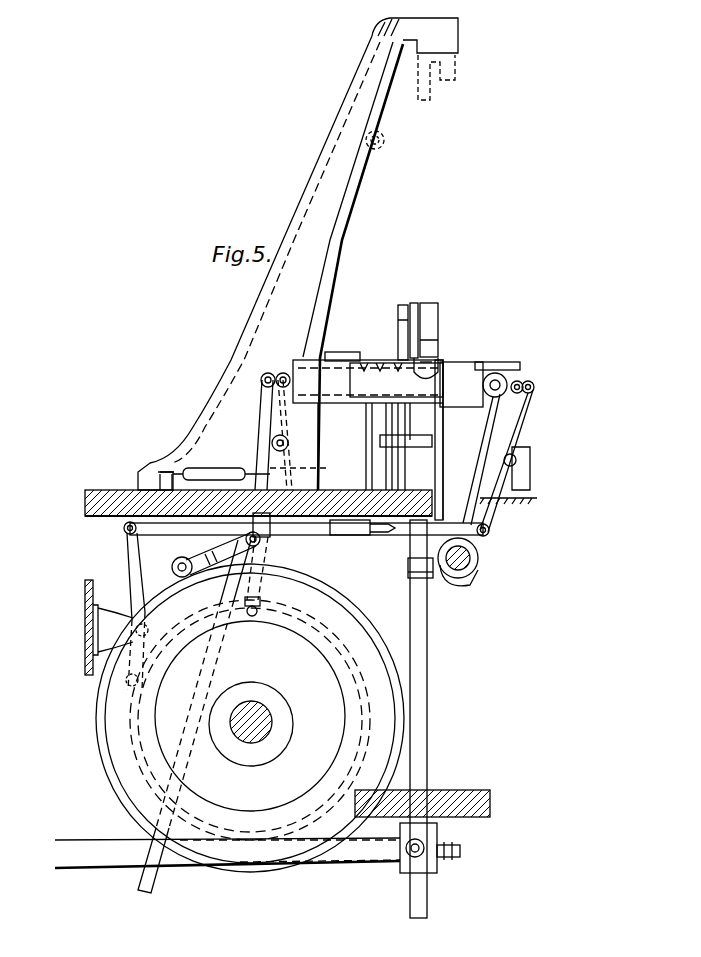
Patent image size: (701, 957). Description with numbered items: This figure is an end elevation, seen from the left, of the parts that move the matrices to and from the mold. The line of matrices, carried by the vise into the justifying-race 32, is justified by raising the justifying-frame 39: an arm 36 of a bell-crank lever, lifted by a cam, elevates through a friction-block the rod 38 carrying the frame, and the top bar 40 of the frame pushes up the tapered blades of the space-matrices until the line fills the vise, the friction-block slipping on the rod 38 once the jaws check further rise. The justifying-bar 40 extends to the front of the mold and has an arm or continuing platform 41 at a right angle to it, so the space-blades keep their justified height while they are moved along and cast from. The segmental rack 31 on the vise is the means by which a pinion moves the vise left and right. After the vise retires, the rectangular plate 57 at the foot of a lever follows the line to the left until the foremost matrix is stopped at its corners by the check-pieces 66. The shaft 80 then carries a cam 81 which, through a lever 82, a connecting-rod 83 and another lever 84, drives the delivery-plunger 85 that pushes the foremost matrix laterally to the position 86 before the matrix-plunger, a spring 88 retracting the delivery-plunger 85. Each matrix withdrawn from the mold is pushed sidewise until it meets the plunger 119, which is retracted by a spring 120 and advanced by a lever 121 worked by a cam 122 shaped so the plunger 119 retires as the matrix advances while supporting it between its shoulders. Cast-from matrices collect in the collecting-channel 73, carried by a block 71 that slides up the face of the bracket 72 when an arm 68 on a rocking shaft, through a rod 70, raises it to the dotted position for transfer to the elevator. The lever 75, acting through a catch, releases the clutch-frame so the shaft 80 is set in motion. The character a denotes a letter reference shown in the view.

The bracket 72 is at (316, 268).
The lever 75 is at (434, 82).
The block 71 is at (388, 136).
The collecting-channel 73 is at (345, 352).
The position 86 is at (396, 356).
The check-pieces 66 is at (430, 366).
The delivery-plunger 85 is at (493, 374).
The plunger 119 is at (326, 398).
The rod a is at (365, 446).
The arm 68 is at (428, 400).
The top bar 40 is at (437, 424).
The justifying-race 32 is at (444, 438).
The arm or continuing platform 41 is at (392, 447).
The lever 121 is at (272, 434).
The spring 120 is at (230, 476).
The lever 84 is at (498, 522).
The connecting-rod 83 is at (200, 535).
The spring 88 is at (345, 535).
The justifying-frame 39 is at (408, 568).
The segmental rack 31 is at (466, 576).
The lever 82 is at (137, 570).
The cam 122 is at (250, 717).
The cam 81 is at (307, 600).
The shaft 80 is at (275, 717).
The rod 38 is at (415, 676).
The arm 36 is at (227, 853).
The rod 70 is at (194, 716).
The rectangular plate 57 is at (447, 838).